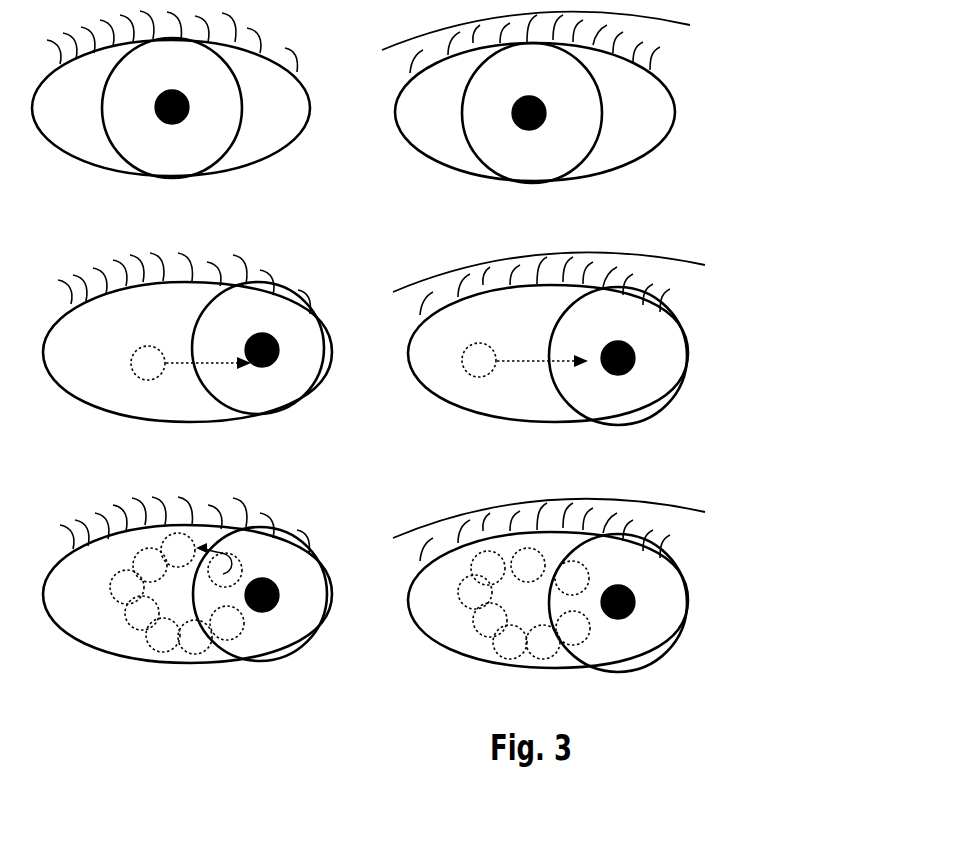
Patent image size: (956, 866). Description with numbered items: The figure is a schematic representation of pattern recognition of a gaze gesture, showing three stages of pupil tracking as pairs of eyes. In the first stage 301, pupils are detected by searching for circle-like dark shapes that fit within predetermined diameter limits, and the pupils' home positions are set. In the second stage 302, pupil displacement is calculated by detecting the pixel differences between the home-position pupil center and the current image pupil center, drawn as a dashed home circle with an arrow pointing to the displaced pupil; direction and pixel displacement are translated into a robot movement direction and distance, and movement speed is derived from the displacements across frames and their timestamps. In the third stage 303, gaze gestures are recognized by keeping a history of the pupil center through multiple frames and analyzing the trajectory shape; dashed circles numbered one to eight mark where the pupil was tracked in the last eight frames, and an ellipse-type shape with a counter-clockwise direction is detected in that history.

The pupil detection and home position setting 301 is at (432, 97).
The pupil displacement calculation 302 is at (441, 338).
The gaze gesture recognition 303 is at (445, 584).